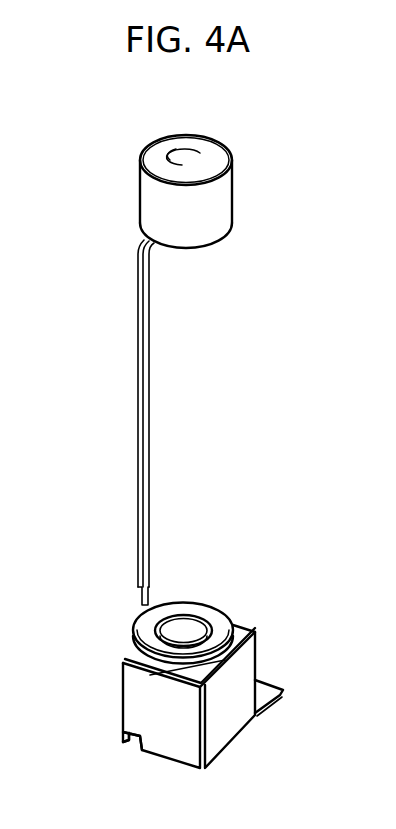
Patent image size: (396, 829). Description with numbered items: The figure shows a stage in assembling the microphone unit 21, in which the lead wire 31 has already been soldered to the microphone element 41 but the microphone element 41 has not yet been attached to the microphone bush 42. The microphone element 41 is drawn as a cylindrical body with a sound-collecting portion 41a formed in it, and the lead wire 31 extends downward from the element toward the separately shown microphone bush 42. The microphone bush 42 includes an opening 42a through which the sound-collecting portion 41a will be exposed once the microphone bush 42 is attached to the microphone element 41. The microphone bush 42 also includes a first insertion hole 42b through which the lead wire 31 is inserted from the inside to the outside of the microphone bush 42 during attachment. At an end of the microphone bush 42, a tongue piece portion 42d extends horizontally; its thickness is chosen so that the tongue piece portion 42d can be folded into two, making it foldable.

The microphone unit 21 is at (102, 125).
The microphone element 41 is at (207, 203).
The sound-collecting portion 41a is at (200, 153).
The lead wire 31 is at (143, 388).
The microphone bush 42 is at (230, 673).
The opening 42a is at (188, 633).
The first insertion hole 42b is at (135, 740).
The tongue piece portion 42d is at (258, 696).